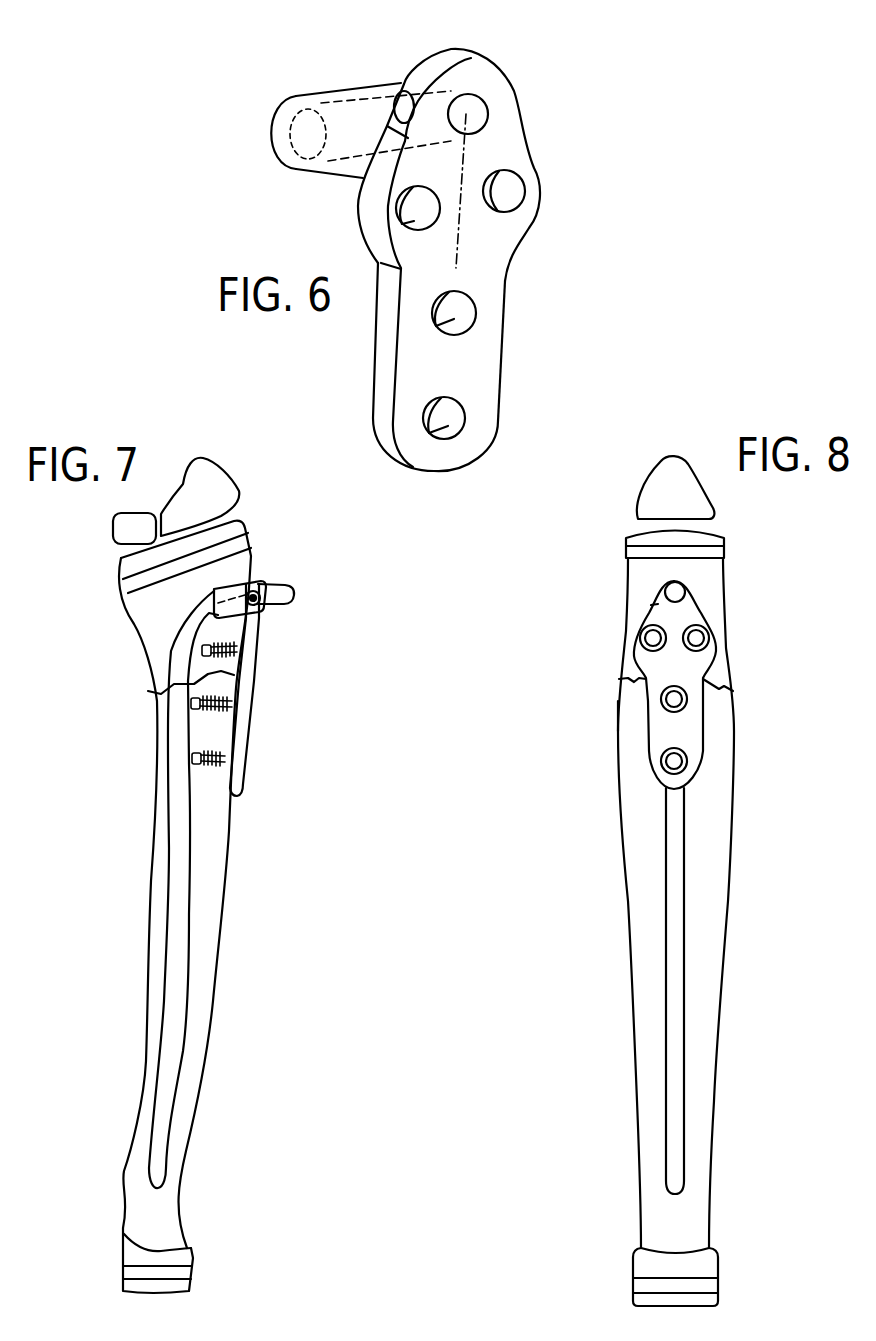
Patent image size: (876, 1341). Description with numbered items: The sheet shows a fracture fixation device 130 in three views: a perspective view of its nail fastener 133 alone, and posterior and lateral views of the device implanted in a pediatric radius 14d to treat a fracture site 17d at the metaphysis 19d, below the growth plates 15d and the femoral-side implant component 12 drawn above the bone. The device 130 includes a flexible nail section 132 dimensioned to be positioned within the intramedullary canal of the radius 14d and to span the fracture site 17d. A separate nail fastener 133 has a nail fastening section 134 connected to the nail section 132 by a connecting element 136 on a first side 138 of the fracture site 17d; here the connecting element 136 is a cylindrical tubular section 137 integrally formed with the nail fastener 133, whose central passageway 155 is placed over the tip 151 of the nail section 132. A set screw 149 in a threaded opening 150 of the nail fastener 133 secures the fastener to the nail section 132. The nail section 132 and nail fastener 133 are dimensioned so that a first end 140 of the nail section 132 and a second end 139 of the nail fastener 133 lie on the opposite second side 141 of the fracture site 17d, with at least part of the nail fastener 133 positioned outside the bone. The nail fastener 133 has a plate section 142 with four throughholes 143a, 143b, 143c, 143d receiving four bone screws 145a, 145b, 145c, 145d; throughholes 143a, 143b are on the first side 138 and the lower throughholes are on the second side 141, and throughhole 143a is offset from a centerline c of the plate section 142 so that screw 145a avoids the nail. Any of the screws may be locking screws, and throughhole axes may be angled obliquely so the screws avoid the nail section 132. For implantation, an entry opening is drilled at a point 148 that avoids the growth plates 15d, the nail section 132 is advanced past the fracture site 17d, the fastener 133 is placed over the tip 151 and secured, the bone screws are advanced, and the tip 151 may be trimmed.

In FIG. 7, the femoral component 12 is at (202, 485).
In FIG. 8, the femoral component 12 is at (673, 492).
In FIG. 7, the pediatric radius 14d is at (162, 1208).
In FIG. 8, the pediatric radius 14d is at (682, 1235).
In FIG. 7, the growth plates 15d is at (128, 585).
In FIG. 8, the growth plates 15d is at (710, 552).
In FIG. 7, the fracture site 17d is at (137, 690).
In FIG. 8, the fracture site 17d is at (745, 689).
In FIG. 7, the metaphysis 19d is at (152, 916).
In FIG. 8, the metaphysis 19d is at (690, 911).
In FIG. 7, the fracture fixation device 130 is at (272, 670).
In FIG. 7, the nail section 132 is at (168, 1072).
In FIG. 8, the nail section 132 is at (679, 588).
In FIG. 6, the nail fastener 133 is at (460, 308).
In FIG. 6, the nail fastening section 134 is at (451, 308).
In FIG. 7, the nail fastening section 134 is at (288, 690).
In FIG. 8, the nail fastening section 134 is at (675, 883).
In FIG. 6, the connecting element 136 is at (332, 108).
In FIG. 6, the cylindrical tubular section 137 is at (303, 170).
In FIG. 7, the first side 138 is at (155, 658).
In FIG. 8, the first side 138 is at (623, 643).
In FIG. 6, the second end 139 is at (463, 474).
In FIG. 7, the first end 140 is at (155, 1167).
In FIG. 7, the second side 141 is at (165, 768).
In FIG. 8, the second side 141 is at (630, 693).
In FIG. 6, the plate section 142 is at (468, 416).
In FIG. 7, the plate section 142 is at (247, 682).
In FIG. 8, the plate section 142 is at (687, 735).
In FIG. 6, the throughhole 143a is at (413, 217).
In FIG. 6, the throughhole 143b is at (507, 187).
In FIG. 6, the throughhole 143c is at (445, 328).
In FIG. 6, the throughhole 143d is at (450, 420).
In FIG. 8, the bone screw 145a is at (650, 636).
In FIG. 8, the bone screw 145b is at (697, 638).
In FIG. 8, the bone screw 145c is at (667, 707).
In FIG. 8, the bone screw 145d is at (678, 761).
In FIG. 7, the point 148 is at (250, 582).
In FIG. 7, the set screw 149 is at (258, 590).
In FIG. 6, the threaded opening 150 is at (403, 103).
In FIG. 7, the tip 151 is at (283, 596).
In FIG. 6, the central passageway 155 is at (477, 100).
In FIG. 6, the centerline c is at (477, 150).